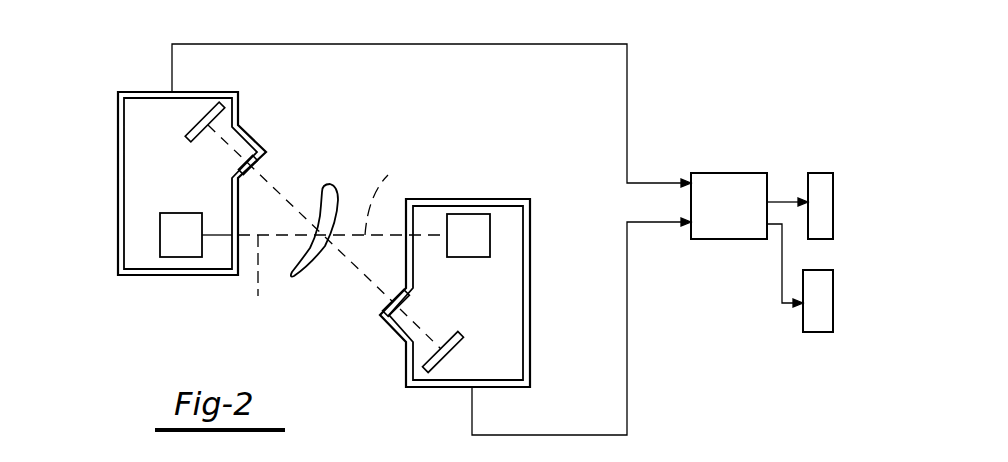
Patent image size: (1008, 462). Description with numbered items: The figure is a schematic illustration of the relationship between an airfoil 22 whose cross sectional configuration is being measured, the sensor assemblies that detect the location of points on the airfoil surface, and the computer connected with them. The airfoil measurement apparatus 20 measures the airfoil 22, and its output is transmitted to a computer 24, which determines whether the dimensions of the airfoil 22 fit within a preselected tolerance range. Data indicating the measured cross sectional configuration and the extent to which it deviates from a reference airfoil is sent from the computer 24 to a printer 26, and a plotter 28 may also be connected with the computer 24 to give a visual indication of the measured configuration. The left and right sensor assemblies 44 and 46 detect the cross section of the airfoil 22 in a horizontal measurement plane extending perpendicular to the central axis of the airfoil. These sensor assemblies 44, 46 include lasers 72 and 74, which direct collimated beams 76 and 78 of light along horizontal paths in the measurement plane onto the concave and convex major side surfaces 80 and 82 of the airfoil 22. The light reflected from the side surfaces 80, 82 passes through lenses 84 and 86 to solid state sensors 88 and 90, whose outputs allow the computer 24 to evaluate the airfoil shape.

The airfoil measurement apparatus 20 is at (463, 160).
The airfoil 22 is at (342, 181).
The computer 24 is at (728, 195).
The printer 26 is at (818, 188).
The plotter 28 is at (817, 315).
The left sensor assembly 44 is at (110, 178).
The right sensor assembly 46 is at (540, 355).
The laser 72 is at (181, 232).
The laser 74 is at (463, 240).
The collimated beam 76 is at (255, 278).
The collimated beam 78 is at (391, 200).
The concave major side surface 80 is at (320, 193).
The convex major side surface 82 is at (322, 256).
The lens 84 is at (258, 168).
The lens 86 is at (393, 305).
The solid state sensor 88 is at (204, 118).
The solid state sensor 90 is at (442, 368).